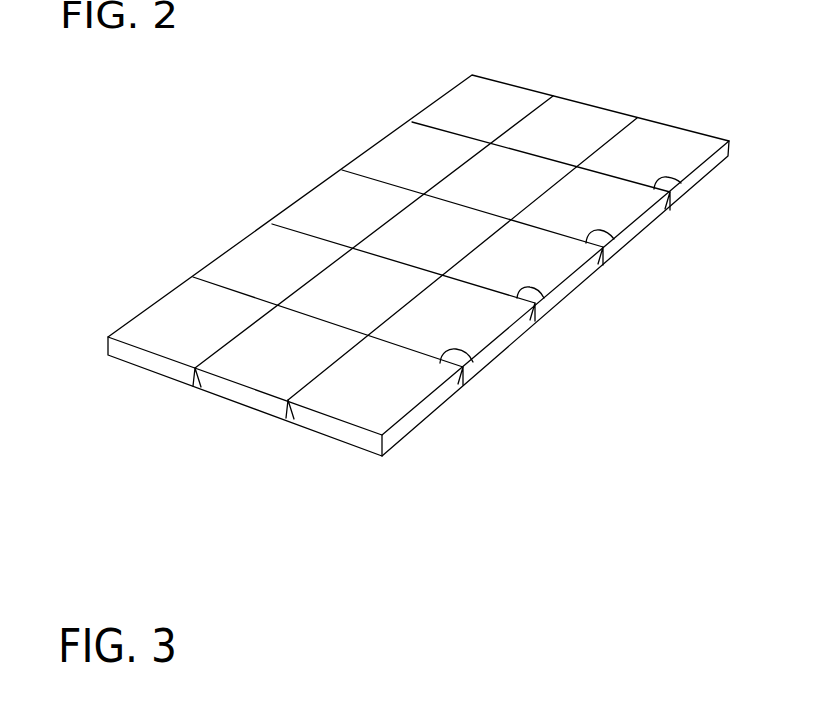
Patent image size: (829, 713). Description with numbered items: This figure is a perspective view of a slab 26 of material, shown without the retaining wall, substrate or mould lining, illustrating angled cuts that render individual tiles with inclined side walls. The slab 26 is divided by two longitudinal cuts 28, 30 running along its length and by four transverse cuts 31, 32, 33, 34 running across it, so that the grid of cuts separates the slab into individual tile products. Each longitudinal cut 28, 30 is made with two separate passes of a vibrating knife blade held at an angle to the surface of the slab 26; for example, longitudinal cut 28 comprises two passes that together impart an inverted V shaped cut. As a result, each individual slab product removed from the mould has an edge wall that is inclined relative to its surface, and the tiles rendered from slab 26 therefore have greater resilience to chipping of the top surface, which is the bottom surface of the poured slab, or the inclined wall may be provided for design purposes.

The slab 26 is at (173, 214).
The longitudinal cut 28 is at (530, 110).
The longitudinal cut 30 is at (612, 133).
The transverse cut 31 is at (473, 362).
The transverse cut 32 is at (544, 298).
The transverse cut 33 is at (614, 239).
The transverse cut 34 is at (681, 183).